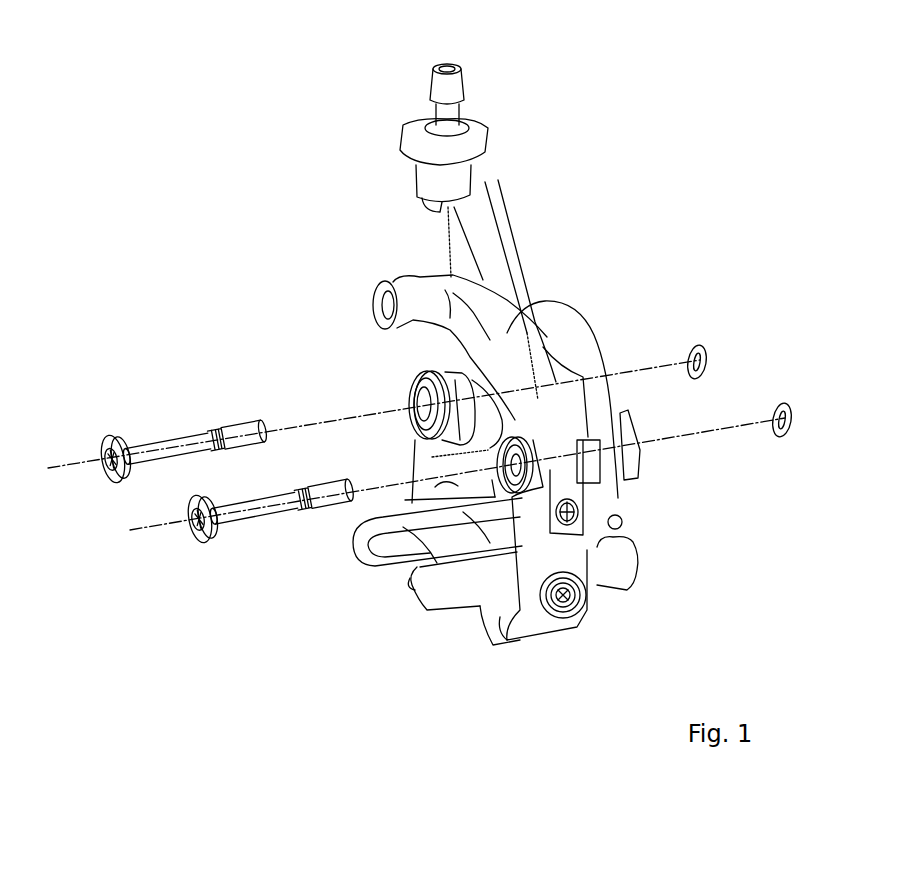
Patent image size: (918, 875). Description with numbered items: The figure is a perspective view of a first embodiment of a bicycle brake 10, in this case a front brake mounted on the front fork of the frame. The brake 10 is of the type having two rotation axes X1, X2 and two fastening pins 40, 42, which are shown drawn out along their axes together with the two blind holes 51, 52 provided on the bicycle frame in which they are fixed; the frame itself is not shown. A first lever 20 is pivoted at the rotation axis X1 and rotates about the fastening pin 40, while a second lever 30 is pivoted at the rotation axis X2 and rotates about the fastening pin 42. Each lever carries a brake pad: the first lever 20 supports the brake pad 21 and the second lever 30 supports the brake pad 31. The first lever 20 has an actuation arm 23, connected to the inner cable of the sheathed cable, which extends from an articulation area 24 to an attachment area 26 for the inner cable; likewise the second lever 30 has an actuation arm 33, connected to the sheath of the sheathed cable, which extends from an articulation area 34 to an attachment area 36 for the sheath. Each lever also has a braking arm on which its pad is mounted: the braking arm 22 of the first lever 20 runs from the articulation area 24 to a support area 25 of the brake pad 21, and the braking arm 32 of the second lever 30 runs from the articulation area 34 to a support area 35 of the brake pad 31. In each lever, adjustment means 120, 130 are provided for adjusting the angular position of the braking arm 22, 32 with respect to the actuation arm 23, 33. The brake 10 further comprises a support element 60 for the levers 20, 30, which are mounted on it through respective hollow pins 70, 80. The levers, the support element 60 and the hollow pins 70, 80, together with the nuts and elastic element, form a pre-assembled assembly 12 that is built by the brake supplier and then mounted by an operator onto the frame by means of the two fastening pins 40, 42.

The bicycle brake 10 is at (616, 86).
The pre-assembled assembly 12 is at (573, 287).
The first lever 20 is at (420, 285).
The brake pad 21 is at (465, 600).
The braking arm 22 is at (585, 545).
The actuation arm 23 is at (522, 385).
The articulation area 24 is at (537, 473).
The support area 25 is at (510, 640).
The attachment area 26 is at (387, 302).
The second lever 30 is at (475, 256).
The brake pad 31 is at (390, 565).
The braking arm 32 is at (425, 473).
The actuation arm 33 is at (478, 215).
The articulation area 34 is at (440, 352).
The support area 35 is at (375, 500).
The attachment area 36 is at (440, 150).
The fastening pin 40 is at (257, 505).
The fastening pin 42 is at (165, 452).
The blind hole 51 is at (773, 402).
The blind hole 52 is at (707, 365).
The support element 60 is at (590, 370).
The hollow pin 70 is at (510, 450).
The hollow pin 80 is at (405, 392).
The adjustment means 120 is at (585, 512).
The adjustment means 130 is at (402, 382).
The rotation axis X1 is at (453, 492).
The rotation axis X2 is at (374, 433).